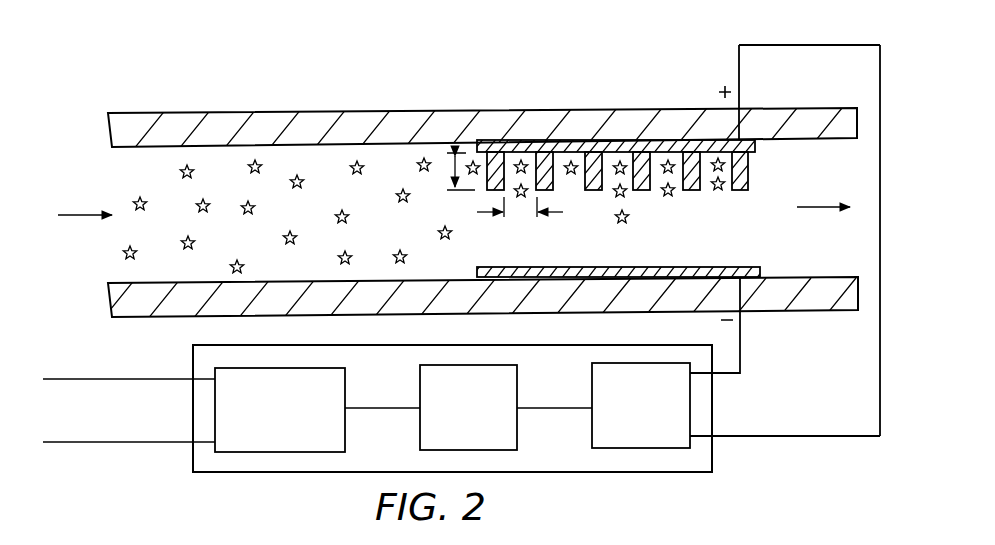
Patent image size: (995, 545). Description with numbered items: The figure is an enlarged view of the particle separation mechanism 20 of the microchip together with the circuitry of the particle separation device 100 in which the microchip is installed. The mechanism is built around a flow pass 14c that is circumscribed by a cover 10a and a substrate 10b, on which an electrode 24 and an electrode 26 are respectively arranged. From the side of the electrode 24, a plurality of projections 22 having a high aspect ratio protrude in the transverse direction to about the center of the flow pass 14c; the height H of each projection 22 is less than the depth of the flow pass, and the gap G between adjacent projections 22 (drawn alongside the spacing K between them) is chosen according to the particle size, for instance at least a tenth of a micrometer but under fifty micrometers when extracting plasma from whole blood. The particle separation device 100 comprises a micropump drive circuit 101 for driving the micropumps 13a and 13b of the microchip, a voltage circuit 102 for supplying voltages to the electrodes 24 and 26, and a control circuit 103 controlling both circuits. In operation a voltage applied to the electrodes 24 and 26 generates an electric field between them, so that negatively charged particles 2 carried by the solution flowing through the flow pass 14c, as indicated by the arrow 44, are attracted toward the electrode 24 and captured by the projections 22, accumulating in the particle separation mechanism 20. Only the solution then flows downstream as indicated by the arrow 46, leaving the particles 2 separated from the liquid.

The particles 2 is at (197, 209).
The cover 10a is at (833, 290).
The substrate 10b is at (225, 118).
The micropump 13a is at (68, 379).
The micropump 13b is at (68, 442).
The flow pass 14c is at (333, 155).
The particle separation mechanism 20 is at (624, 138).
The projections 22 is at (641, 190).
The electrode 24 is at (601, 143).
The electrode 26 is at (688, 272).
The arrow 44 is at (80, 215).
The arrow 46 is at (817, 207).
The particle separation device 100 is at (485, 408).
The micropump drive circuit 101 is at (348, 395).
The voltage circuit 102 is at (592, 420).
The control circuit 103 is at (522, 393).
The height of the projection H is at (452, 170).
The protrusion gap width K is at (519, 225).
The gap between adjacent projections G is at (521, 210).